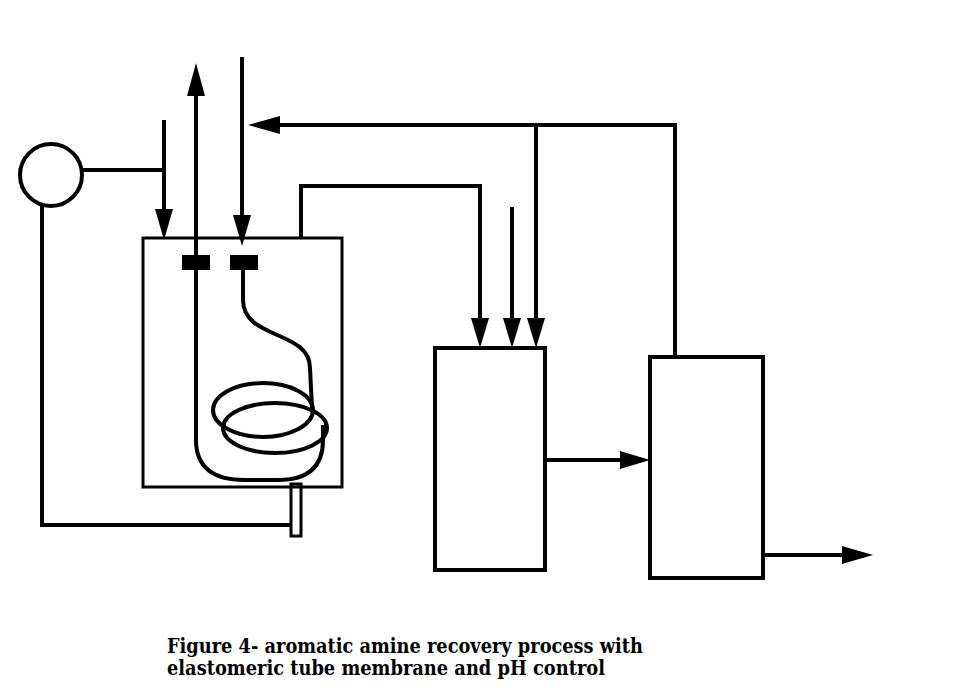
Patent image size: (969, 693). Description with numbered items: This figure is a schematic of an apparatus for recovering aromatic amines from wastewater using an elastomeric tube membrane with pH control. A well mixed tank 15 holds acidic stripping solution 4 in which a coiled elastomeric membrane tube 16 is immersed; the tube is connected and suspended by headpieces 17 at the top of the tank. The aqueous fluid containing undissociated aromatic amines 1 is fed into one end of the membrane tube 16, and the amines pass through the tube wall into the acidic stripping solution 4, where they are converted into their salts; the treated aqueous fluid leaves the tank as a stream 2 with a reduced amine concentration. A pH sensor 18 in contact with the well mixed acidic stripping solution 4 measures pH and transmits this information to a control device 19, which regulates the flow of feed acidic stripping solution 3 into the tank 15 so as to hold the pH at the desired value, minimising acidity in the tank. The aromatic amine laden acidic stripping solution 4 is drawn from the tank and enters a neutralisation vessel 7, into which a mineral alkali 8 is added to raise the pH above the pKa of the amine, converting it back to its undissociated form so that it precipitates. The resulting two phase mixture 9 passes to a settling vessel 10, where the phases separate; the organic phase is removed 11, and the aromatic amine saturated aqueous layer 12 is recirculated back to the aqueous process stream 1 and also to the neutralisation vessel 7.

The aqueous fluid containing undissociated aromatic amines 1 is at (244, 133).
The treated effluent outlet stream 2 is at (199, 139).
The feed acidic stripping solution 3 is at (149, 180).
The aromatic amine laden acidic stripping solution 4 is at (395, 267).
The neutralisation vessel 7 is at (490, 459).
The mineral alkali 8 is at (514, 261).
The two phase mixture 9 is at (597, 446).
The settling vessel 10 is at (706, 467).
The organic phase removal 11 is at (818, 542).
The aromatic amine saturated aqueous layer 12 is at (495, 236).
The well mixed tank 15 is at (242, 362).
The elastomeric membrane tube 16 is at (170, 391).
The headpieces 17 is at (168, 270).
The pH sensor 18 is at (322, 512).
The control device 19 is at (155, 334).